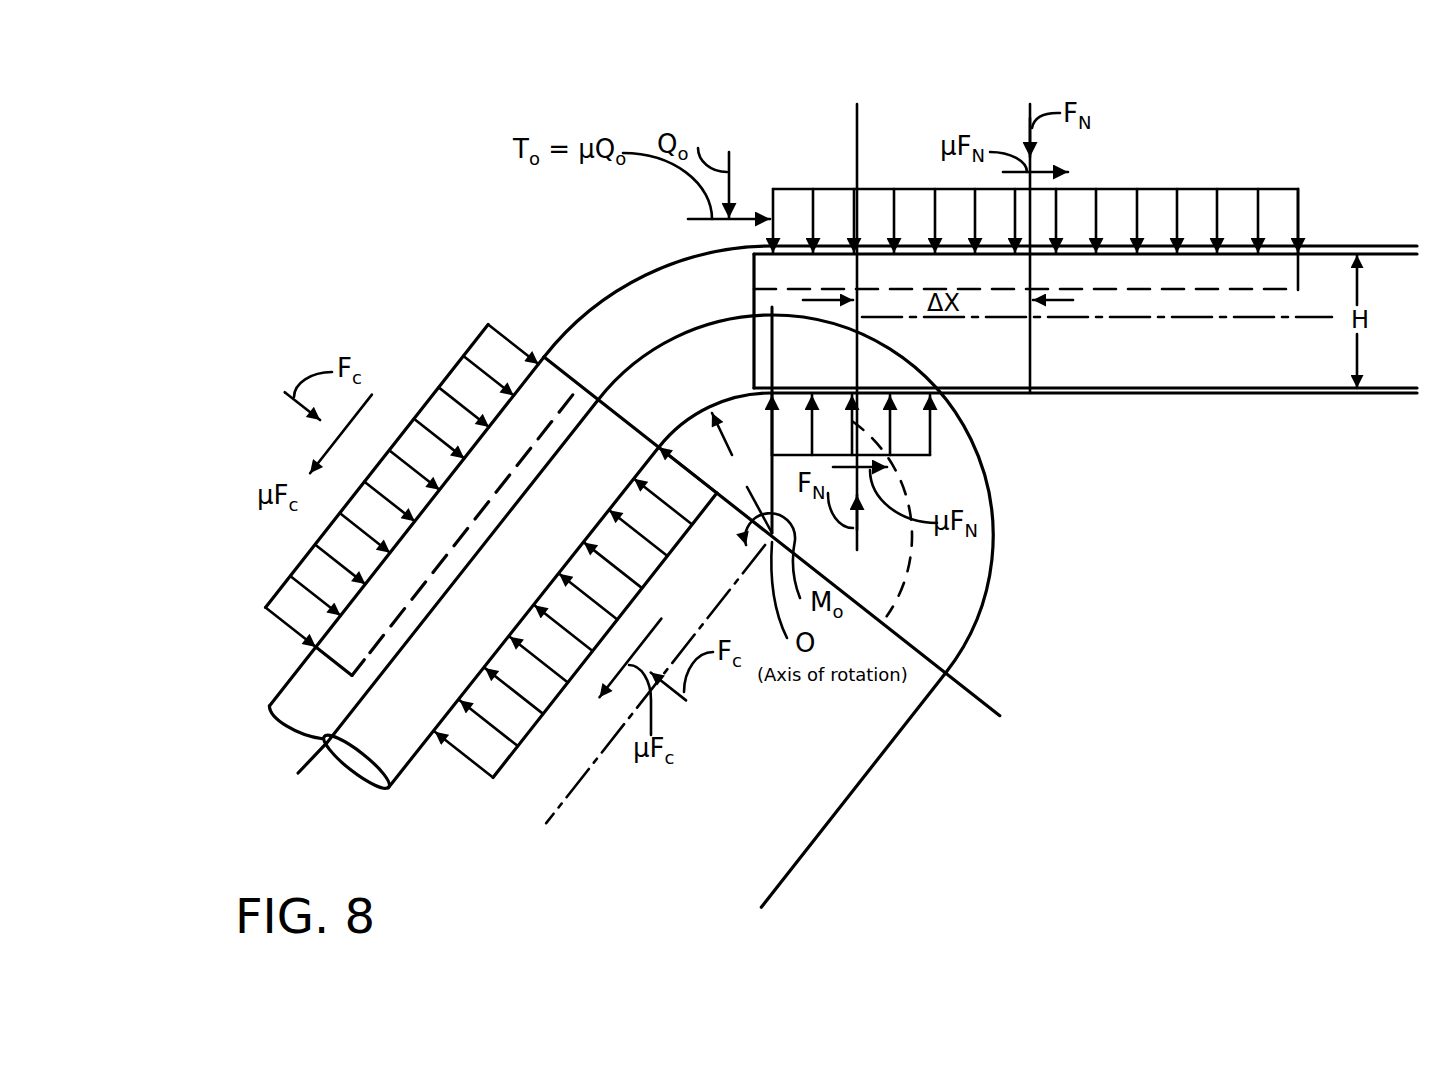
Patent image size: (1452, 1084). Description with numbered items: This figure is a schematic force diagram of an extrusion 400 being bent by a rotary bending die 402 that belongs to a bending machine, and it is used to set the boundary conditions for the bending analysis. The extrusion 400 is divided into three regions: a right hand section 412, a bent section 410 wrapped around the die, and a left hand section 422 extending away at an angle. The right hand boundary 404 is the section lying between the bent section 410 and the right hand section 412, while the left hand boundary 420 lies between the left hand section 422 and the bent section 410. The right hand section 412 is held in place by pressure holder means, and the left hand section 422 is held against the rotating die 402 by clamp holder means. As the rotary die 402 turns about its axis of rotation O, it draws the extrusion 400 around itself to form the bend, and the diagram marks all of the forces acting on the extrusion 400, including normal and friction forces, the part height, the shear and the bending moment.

The extrusion 400 is at (578, 287).
The rotary bending die 402 is at (968, 482).
The right hand boundary 404 is at (767, 307).
The bent section 410 is at (642, 303).
The right hand section 412 is at (1323, 397).
The left hand boundary 420 is at (567, 380).
The left hand section 422 is at (287, 668).